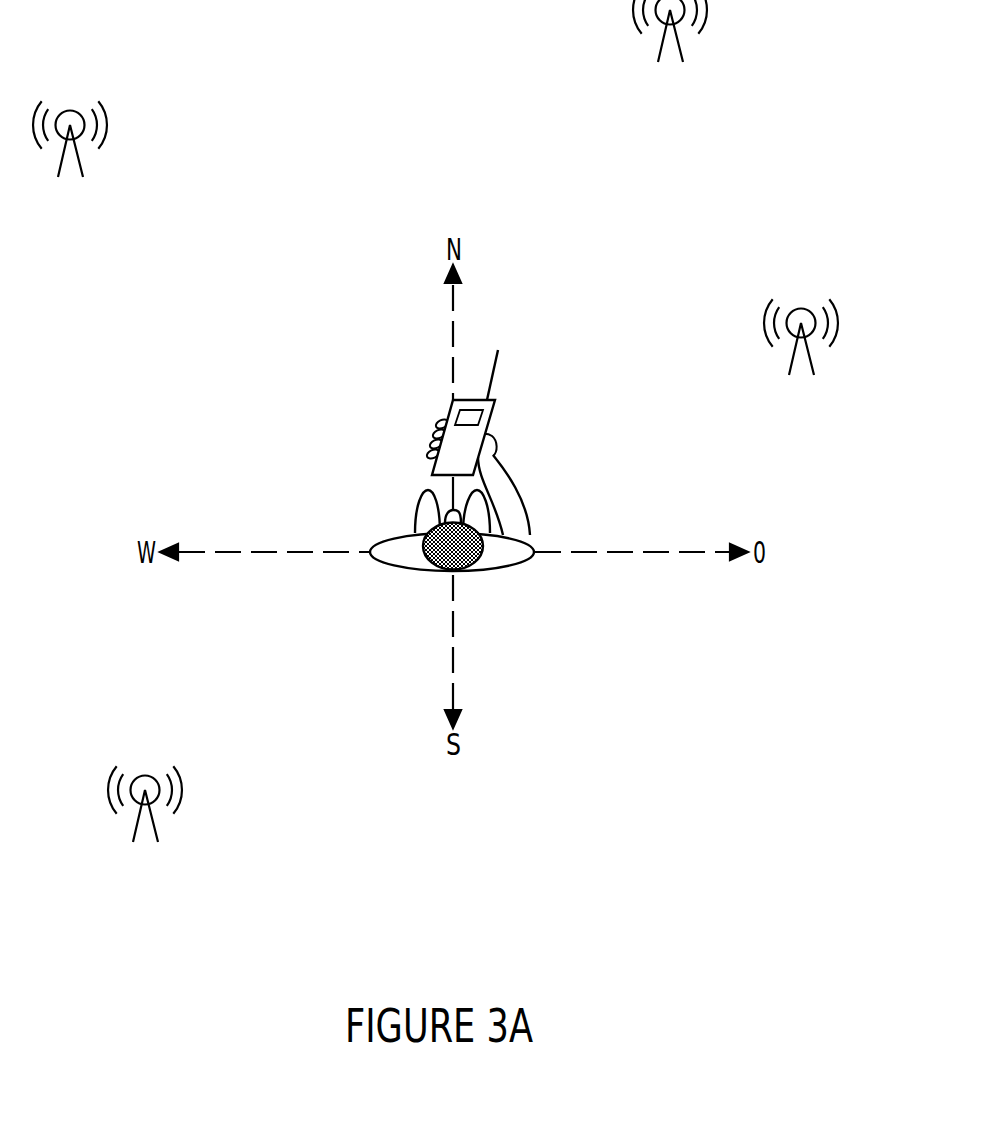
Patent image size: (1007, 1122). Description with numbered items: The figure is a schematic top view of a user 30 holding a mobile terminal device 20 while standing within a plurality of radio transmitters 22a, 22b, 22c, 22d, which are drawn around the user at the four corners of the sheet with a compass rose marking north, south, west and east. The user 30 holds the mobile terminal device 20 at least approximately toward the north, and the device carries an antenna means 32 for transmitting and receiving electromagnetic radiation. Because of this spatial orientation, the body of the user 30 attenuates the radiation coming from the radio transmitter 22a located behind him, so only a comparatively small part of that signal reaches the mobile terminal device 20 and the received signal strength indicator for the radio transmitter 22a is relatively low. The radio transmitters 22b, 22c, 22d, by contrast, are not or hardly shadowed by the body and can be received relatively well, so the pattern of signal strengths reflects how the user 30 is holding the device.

The mobile terminal device 20 is at (494, 420).
The radio transmitter 22a is at (160, 824).
The radio transmitter 22b is at (813, 355).
The radio transmitter 22c is at (685, 46).
The radio transmitter 22d is at (85, 155).
The user 30 is at (516, 571).
The antenna means 32 is at (499, 354).